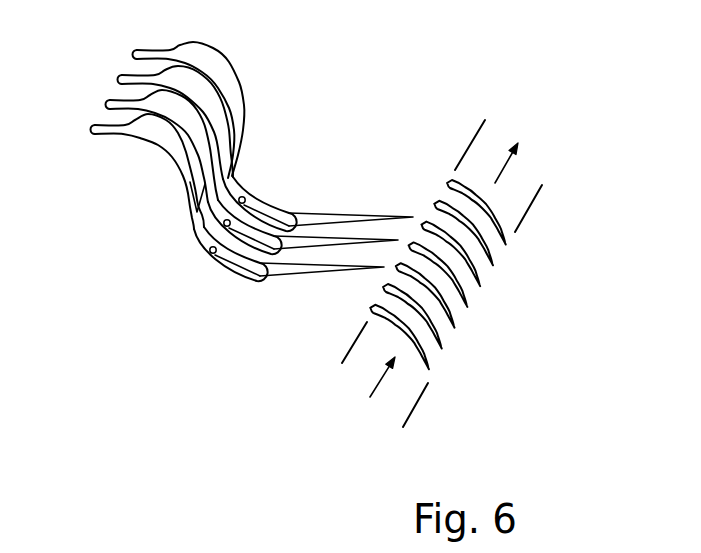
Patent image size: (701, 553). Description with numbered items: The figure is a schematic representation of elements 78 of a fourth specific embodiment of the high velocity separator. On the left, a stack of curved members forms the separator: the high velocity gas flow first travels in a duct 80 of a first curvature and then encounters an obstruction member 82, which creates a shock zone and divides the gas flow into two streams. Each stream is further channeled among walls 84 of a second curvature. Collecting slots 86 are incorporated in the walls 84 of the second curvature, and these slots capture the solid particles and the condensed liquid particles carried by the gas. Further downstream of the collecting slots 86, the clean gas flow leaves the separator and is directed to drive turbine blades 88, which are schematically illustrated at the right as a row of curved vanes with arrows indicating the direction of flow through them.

The elements 78 is at (140, 157).
The duct of a first curvature 80 is at (241, 121).
The obstruction member 82 is at (230, 172).
The walls of a second curvature 84 is at (231, 195).
The collecting slots 86 is at (286, 216).
The turbine blades 88 is at (495, 215).